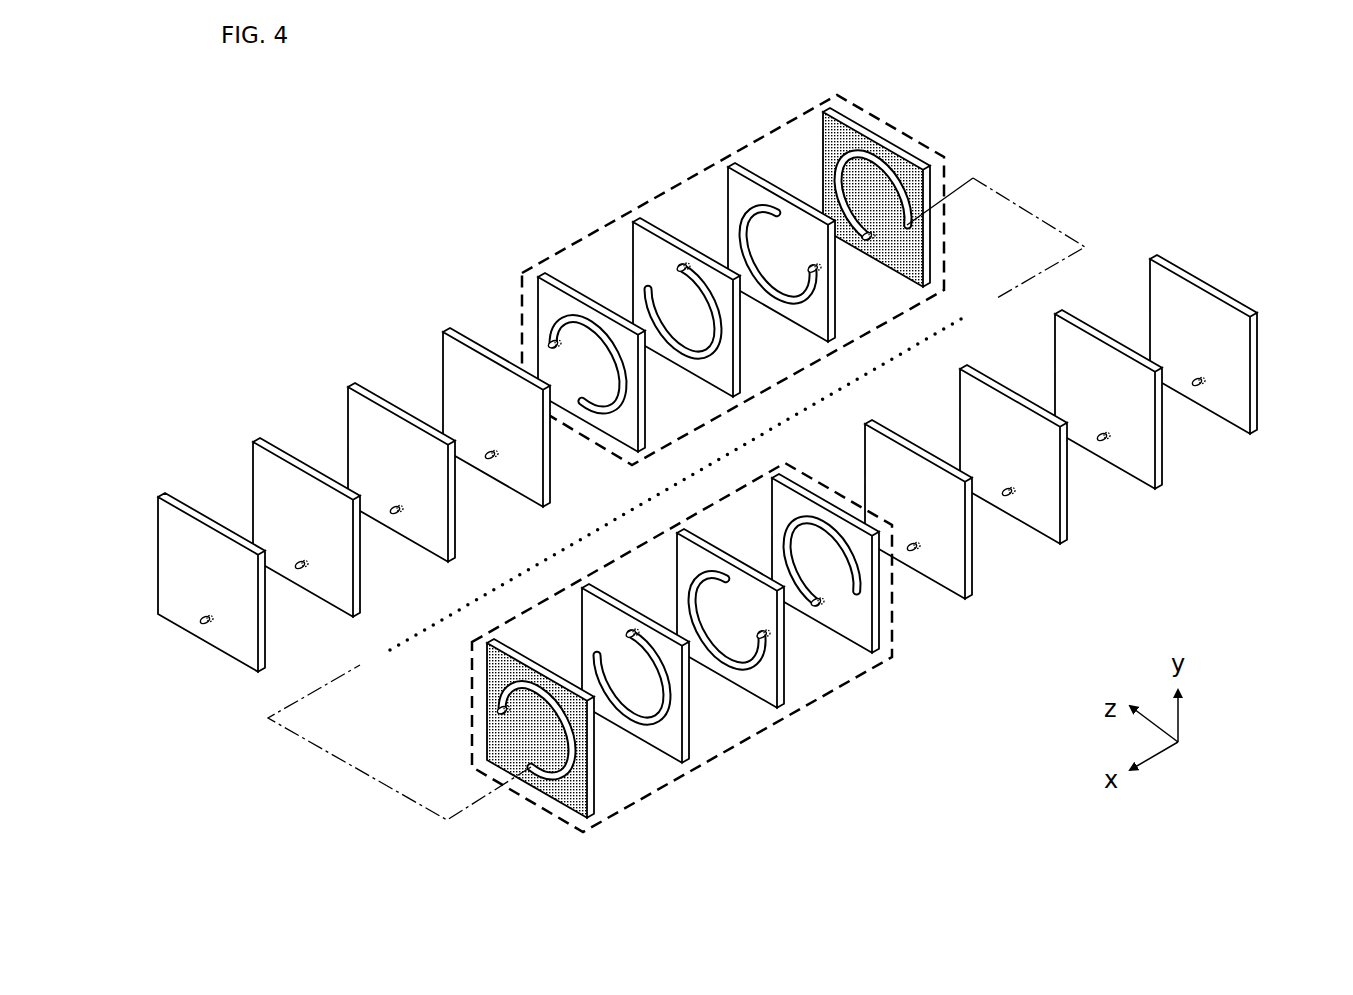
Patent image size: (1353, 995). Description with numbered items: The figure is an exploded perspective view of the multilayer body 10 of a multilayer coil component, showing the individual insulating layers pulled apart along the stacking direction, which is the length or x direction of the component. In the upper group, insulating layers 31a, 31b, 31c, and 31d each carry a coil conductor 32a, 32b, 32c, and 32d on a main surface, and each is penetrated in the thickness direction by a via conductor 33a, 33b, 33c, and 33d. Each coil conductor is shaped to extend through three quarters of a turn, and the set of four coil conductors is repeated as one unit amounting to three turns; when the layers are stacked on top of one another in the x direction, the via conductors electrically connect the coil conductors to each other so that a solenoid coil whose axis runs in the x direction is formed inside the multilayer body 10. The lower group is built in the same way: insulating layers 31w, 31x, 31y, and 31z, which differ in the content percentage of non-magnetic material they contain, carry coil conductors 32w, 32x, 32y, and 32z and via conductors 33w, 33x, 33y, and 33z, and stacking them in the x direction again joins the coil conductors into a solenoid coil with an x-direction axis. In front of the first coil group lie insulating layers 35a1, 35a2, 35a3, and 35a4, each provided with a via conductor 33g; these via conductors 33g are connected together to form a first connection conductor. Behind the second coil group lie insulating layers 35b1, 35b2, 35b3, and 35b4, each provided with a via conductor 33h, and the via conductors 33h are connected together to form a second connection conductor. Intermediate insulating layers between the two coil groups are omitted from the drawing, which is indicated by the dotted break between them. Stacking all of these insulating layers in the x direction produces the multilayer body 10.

The multilayer body 10 is at (336, 264).
The insulating layer 31a is at (546, 280).
The insulating layer 31b is at (641, 225).
The insulating layer 31c is at (736, 170).
The insulating layer 31d is at (831, 115).
The insulating layer 31w is at (590, 820).
The insulating layer 31x is at (685, 765).
The insulating layer 31y is at (780, 710).
The insulating layer 31z is at (875, 655).
The coil conductor 32a is at (604, 408).
The coil conductor 32b is at (697, 353).
The coil conductor 32c is at (790, 302).
The coil conductor 32d is at (836, 183).
The coil conductor 32w is at (550, 775).
The coil conductor 32x is at (646, 720).
The coil conductor 32y is at (740, 665).
The coil conductor 32z is at (786, 547).
The via conductor 33a is at (552, 344).
The via conductor 33b is at (681, 268).
The via conductor 33c is at (812, 269).
The via conductor 33d is at (867, 240).
The via conductor 33w is at (501, 710).
The via conductor 33x is at (630, 634).
The via conductor 33y is at (761, 635).
The via conductor 33z is at (816, 606).
The via conductor 33g is at (210, 626).
The via conductor 33h is at (915, 553).
The insulating layer 35a1 is at (168, 502).
The insulating layer 35a2 is at (263, 447).
The insulating layer 35a3 is at (358, 392).
The insulating layer 35a4 is at (453, 337).
The insulating layer 35b1 is at (1253, 436).
The insulating layer 35b2 is at (1158, 491).
The insulating layer 35b3 is at (1063, 546).
The insulating layer 35b4 is at (968, 601).